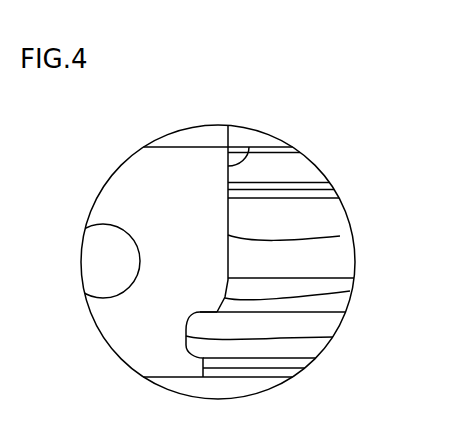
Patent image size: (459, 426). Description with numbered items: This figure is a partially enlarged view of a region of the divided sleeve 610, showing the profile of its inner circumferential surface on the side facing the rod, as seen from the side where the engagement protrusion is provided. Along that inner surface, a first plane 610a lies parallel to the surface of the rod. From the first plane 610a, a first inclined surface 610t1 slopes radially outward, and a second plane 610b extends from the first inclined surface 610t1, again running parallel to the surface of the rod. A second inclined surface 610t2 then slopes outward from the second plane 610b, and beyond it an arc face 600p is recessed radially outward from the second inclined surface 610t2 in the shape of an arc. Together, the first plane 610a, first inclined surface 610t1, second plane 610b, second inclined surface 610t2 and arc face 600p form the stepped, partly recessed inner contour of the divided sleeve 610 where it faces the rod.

The divided sleeve 610 is at (200, 147).
The first plane 610a is at (250, 151).
The first inclined surface 610t1 is at (228, 191).
The second plane 610b is at (340, 236).
The second inclined surface 610t2 is at (350, 291).
The arc face 600p is at (333, 337).